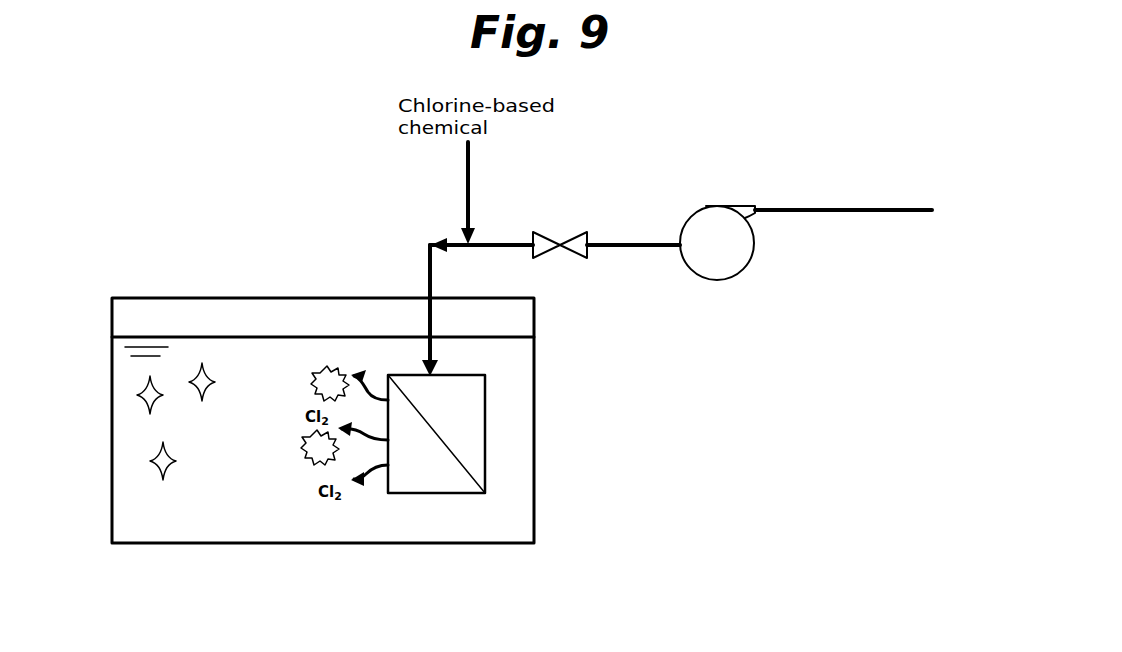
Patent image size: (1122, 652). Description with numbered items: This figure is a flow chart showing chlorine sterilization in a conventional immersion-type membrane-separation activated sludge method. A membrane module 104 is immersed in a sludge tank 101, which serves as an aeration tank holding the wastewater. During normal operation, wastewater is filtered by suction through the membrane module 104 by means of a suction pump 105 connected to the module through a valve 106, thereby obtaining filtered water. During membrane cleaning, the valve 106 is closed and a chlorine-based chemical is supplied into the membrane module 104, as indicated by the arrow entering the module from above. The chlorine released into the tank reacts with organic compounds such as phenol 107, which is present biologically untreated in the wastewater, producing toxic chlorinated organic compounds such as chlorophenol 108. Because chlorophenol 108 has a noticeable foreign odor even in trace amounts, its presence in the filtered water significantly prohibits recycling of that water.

The sludge tank 101 is at (210, 545).
The membrane module 104 is at (485, 418).
The suction pump 105 is at (716, 206).
The valve 106 is at (560, 245).
The phenol 107 is at (138, 390).
The chlorophenol 108 is at (310, 372).